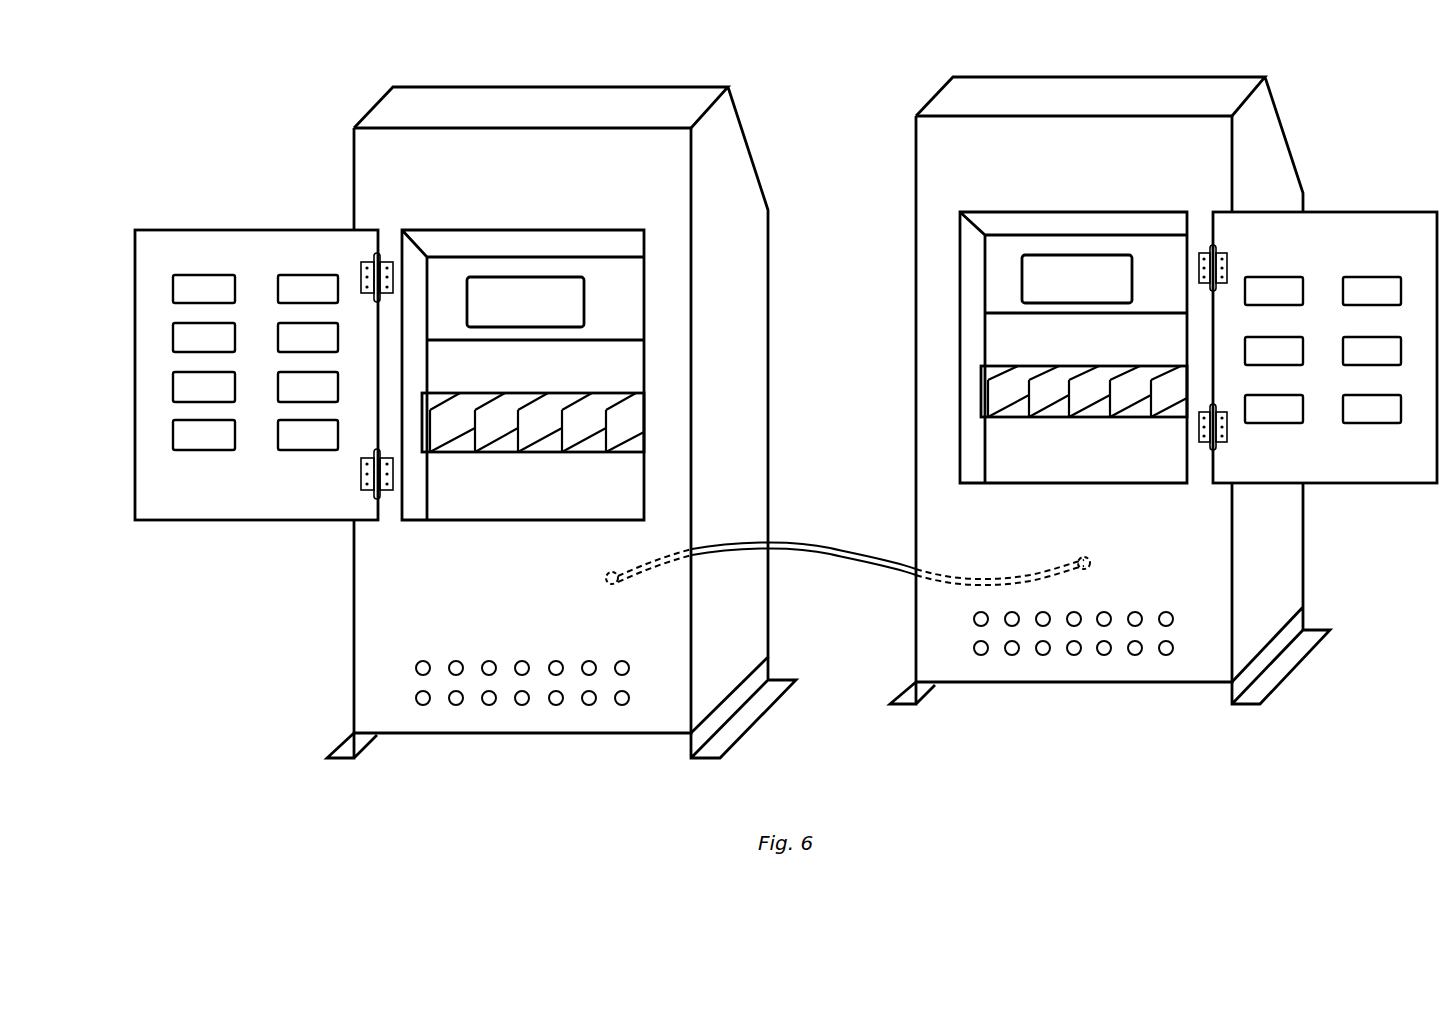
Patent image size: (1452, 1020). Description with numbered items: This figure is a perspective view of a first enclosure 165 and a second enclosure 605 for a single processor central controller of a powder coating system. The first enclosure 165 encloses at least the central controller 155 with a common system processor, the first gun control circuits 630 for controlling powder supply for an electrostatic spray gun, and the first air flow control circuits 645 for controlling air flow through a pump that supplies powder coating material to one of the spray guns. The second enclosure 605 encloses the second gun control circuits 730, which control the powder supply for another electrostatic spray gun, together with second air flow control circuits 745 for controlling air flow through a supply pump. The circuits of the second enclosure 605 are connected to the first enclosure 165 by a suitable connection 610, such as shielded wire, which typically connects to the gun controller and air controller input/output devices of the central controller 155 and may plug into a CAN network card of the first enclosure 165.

The central controller 155 is at (530, 302).
The first enclosure 165 is at (415, 612).
The second enclosure 605 is at (1260, 549).
The connection 610 is at (866, 568).
The first gun control circuits 630 is at (492, 422).
The first air flow control circuits 645 is at (213, 333).
The second gun control circuits 730 is at (1043, 389).
The door buttons 745 is at (1370, 290).